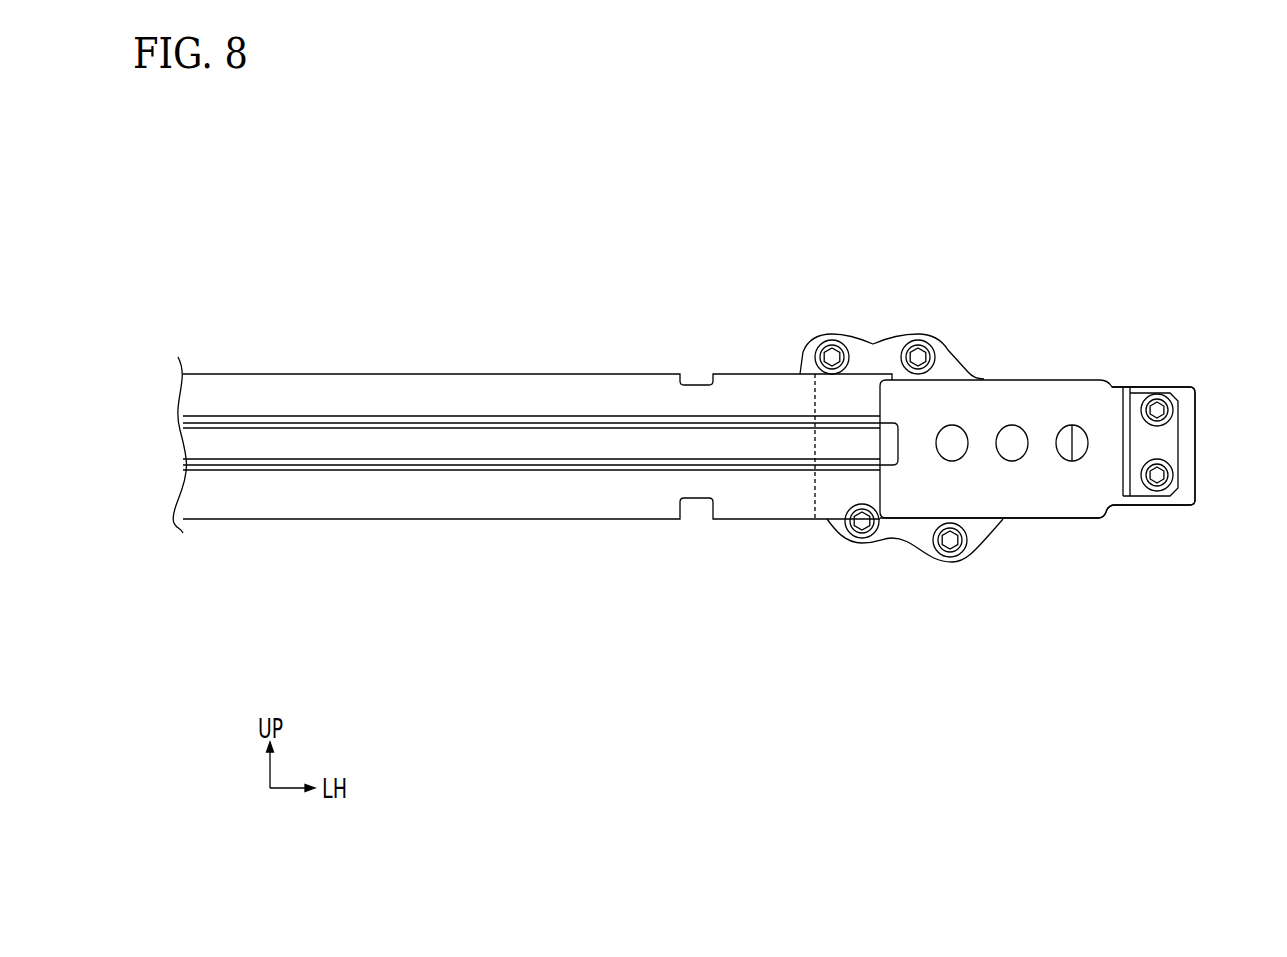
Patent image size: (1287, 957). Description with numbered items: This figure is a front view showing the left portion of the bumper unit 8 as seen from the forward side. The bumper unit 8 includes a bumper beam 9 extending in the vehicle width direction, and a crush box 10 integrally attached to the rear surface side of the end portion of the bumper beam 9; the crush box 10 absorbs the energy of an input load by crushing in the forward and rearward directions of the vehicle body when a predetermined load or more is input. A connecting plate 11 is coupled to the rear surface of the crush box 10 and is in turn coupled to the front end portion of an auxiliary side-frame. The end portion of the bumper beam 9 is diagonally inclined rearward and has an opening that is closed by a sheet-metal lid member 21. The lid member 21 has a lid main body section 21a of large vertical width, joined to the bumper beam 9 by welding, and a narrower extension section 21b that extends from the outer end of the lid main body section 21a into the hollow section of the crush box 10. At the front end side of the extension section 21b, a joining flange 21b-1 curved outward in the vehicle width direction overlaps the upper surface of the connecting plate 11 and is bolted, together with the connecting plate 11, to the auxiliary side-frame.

The bumper unit 8 is at (847, 292).
The bumper beam 9 is at (578, 374).
The crush box 10 is at (1075, 497).
The connecting plate 11 is at (977, 530).
The lid member 21 is at (1045, 378).
The lid main body section 21a is at (1005, 393).
The extension section 21b is at (1126, 408).
The joining flange 21b-1 is at (1165, 444).